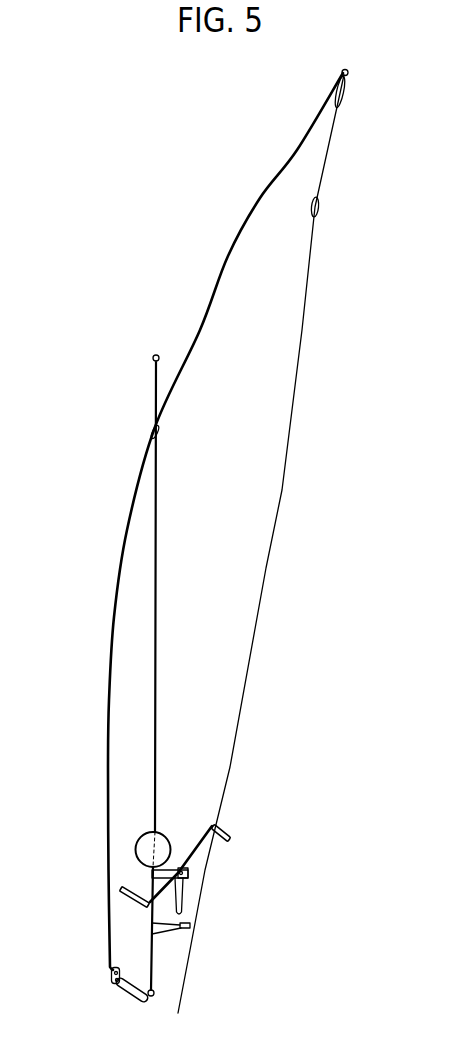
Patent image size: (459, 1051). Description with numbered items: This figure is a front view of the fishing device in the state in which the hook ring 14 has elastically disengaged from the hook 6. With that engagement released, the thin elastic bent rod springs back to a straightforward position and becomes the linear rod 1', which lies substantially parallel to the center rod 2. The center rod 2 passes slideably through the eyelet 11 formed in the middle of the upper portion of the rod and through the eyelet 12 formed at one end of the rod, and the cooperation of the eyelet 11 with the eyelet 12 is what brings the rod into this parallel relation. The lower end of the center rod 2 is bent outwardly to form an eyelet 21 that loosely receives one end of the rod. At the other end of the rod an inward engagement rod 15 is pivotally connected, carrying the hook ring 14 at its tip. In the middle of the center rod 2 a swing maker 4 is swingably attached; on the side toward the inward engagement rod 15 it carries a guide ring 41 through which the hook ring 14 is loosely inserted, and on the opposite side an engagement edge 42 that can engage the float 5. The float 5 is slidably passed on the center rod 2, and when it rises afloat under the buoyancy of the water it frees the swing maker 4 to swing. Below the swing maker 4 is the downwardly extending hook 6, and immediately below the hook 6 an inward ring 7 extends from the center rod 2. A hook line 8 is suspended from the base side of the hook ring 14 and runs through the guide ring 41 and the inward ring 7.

The linear rod 1' is at (209, 521).
The center rod 2 is at (157, 492).
The swing maker 4 is at (202, 844).
The float 5 is at (165, 838).
The hook 6 is at (186, 895).
The inward ring 7 is at (179, 930).
The hook line 8 is at (282, 490).
The eyelet 11 is at (160, 430).
The eyelet 12 is at (157, 995).
The hook ring 14 is at (319, 207).
The inward engagement rod 15 is at (325, 152).
The eyelet 21 is at (110, 968).
The guide ring 41 is at (229, 832).
The engagement edge 42 is at (120, 890).